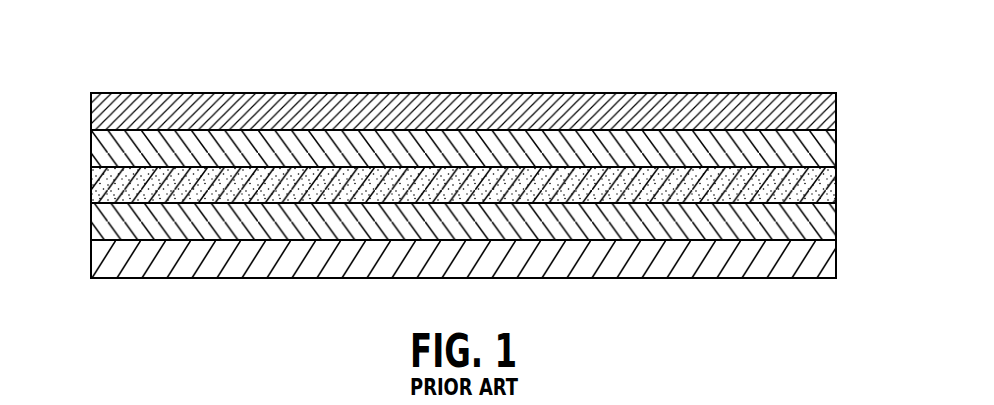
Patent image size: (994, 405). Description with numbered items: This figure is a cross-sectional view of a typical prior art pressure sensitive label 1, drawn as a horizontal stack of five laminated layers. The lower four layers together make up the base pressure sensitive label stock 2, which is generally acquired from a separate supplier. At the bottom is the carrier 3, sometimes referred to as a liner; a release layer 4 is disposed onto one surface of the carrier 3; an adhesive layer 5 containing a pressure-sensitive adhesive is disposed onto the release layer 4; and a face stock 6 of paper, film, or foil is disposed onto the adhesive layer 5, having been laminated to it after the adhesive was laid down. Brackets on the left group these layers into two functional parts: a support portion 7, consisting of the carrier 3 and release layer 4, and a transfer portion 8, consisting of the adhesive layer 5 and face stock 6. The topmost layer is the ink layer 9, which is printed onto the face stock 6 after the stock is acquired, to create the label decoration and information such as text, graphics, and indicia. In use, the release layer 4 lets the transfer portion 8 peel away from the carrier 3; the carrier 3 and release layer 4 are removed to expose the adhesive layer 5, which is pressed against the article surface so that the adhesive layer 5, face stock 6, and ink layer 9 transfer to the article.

The pressure sensitive label 1 is at (635, 58).
The base pressure sensitive label stock 2 is at (480, 202).
The carrier 3 is at (480, 259).
The release layer 4 is at (827, 225).
The adhesive layer 5 is at (827, 189).
The face stock 6 is at (827, 151).
The support portion 7 is at (456, 238).
The transfer portion 8 is at (456, 163).
The ink layer 9 is at (827, 114).